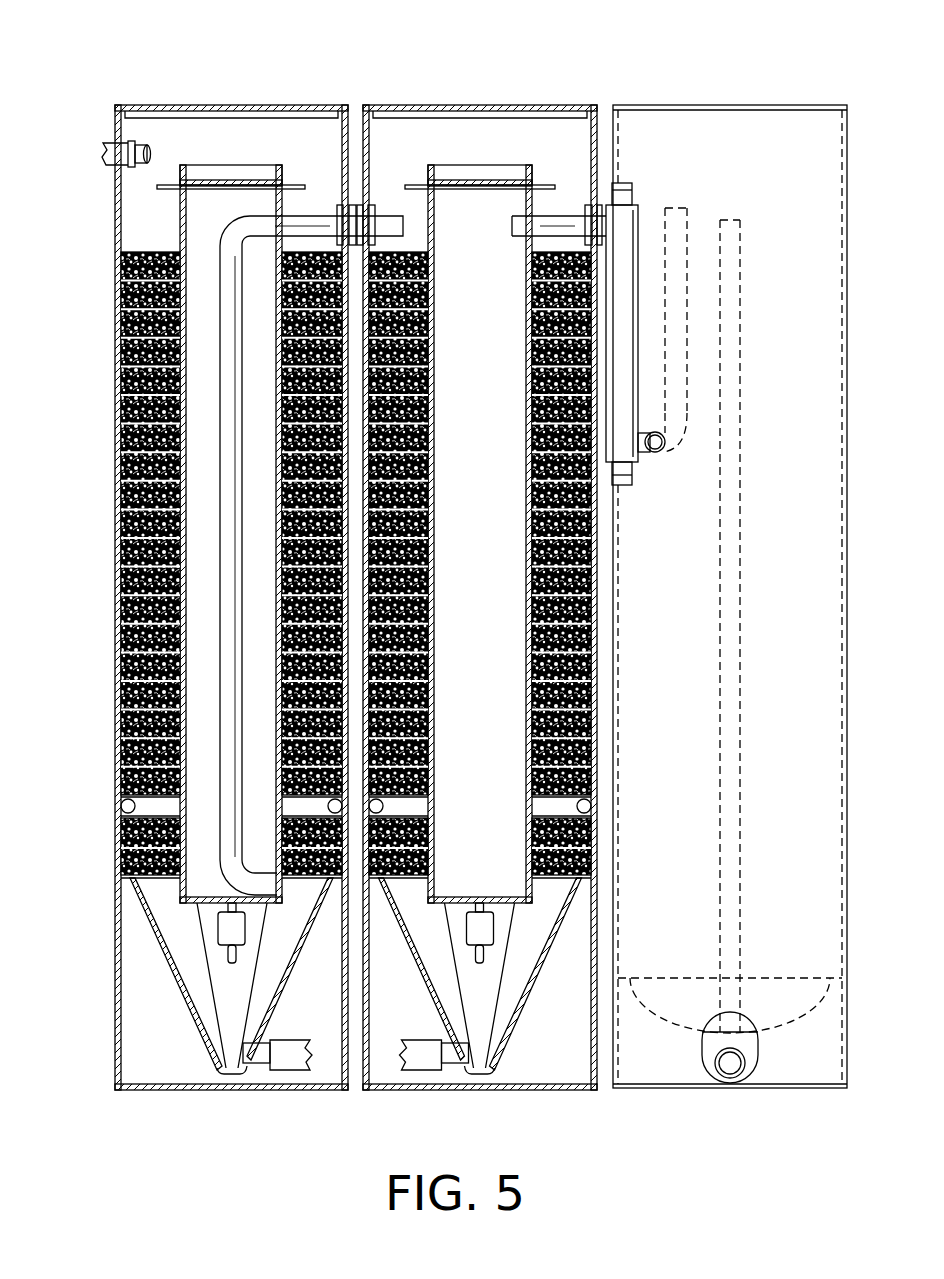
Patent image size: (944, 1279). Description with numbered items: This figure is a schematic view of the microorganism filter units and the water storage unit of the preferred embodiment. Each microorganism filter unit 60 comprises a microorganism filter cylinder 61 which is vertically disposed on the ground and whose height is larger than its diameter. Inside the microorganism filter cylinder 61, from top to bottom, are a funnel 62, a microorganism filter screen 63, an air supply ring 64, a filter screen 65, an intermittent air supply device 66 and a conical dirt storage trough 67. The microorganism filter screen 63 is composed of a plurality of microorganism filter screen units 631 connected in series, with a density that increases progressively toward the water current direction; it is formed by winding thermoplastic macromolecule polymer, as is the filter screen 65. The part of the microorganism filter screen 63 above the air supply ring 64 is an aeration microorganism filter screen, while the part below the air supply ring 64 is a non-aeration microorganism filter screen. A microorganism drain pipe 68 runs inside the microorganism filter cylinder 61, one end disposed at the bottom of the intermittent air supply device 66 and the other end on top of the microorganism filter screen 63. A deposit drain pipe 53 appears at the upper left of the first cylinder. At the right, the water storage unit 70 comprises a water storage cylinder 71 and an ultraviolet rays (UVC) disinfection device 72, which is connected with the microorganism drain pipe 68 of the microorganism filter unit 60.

The deposit drain pipe 53 is at (115, 142).
The microorganism filter unit 60 is at (410, 100).
The microorganism filter cylinder 61 is at (167, 105).
The funnel 62 is at (255, 183).
The microorganism filter screen 63 is at (115, 692).
The microorganism filter screen unit 631 is at (115, 475).
The air supply ring 64 is at (122, 803).
The filter screen 65 is at (121, 827).
The intermittent air supply device 66 is at (223, 928).
The conical dirt storage trough 67 is at (182, 987).
The microorganism drain pipe 68 is at (185, 872).
The water storage unit 70 is at (690, 100).
The water storage cylinder 71 is at (760, 153).
The ultraviolet rays (UVC) disinfection device 72 is at (626, 228).